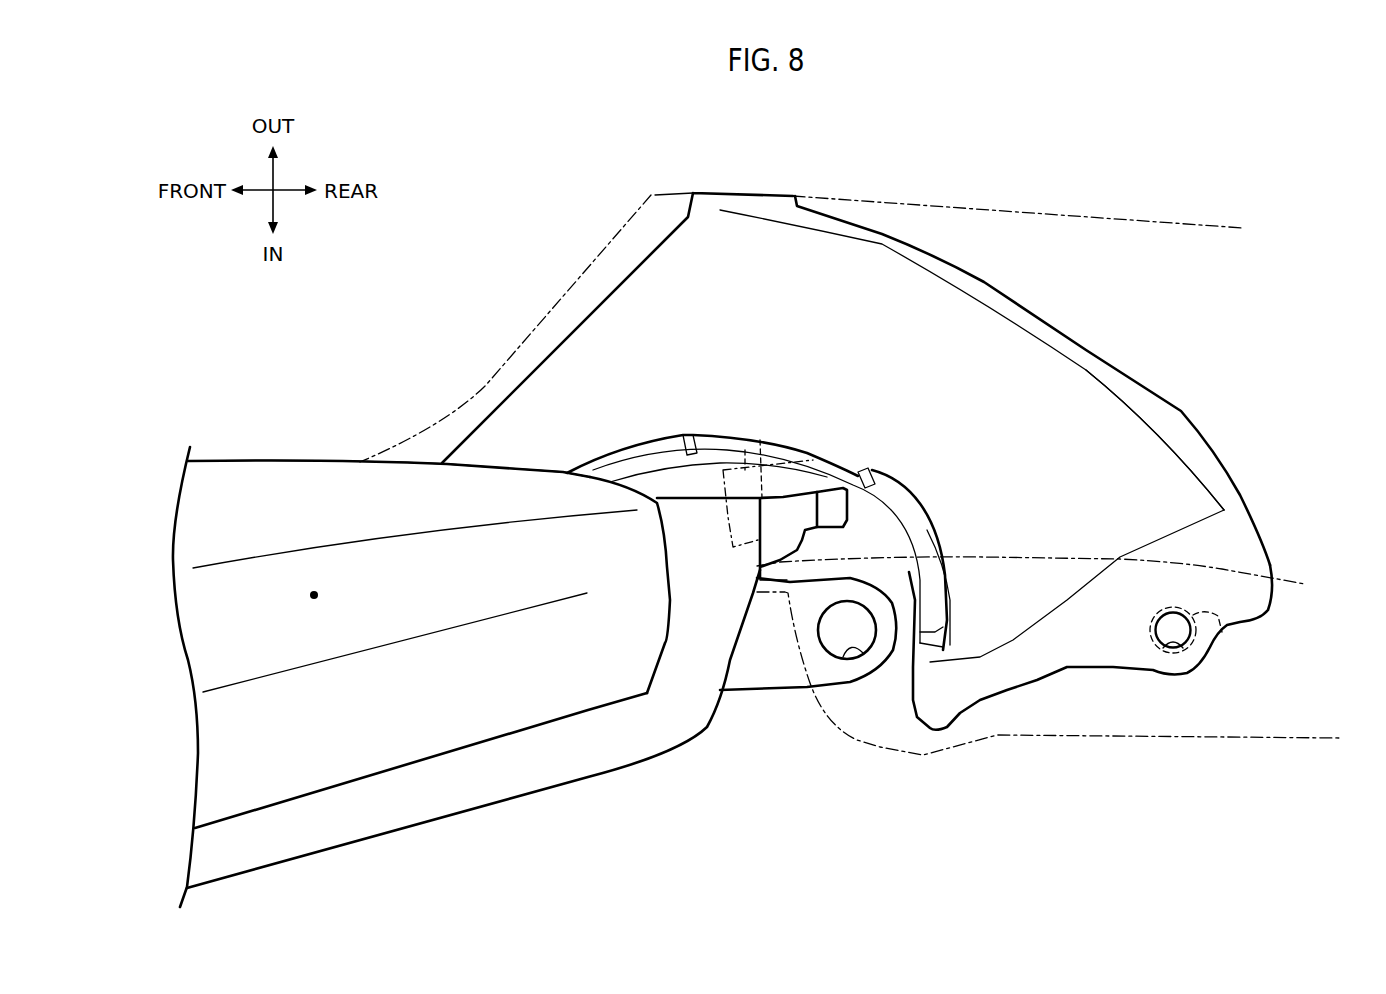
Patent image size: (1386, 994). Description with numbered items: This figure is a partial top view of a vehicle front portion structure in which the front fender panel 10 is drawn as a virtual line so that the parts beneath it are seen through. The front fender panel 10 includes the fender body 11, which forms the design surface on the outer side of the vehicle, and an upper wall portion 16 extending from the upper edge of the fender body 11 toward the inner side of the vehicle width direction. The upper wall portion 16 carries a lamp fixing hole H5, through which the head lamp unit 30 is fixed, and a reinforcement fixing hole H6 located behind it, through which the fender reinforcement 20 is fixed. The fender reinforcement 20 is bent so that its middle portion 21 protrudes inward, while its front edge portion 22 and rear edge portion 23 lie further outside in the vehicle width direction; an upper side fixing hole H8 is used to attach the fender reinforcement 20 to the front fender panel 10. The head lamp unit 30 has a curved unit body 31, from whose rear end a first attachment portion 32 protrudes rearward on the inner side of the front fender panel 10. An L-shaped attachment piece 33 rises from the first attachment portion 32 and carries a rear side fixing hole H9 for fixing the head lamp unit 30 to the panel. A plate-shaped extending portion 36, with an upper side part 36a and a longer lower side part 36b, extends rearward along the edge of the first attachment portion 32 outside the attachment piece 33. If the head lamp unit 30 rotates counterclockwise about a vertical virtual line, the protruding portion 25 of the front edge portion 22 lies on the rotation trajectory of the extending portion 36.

The front fender panel 10 is at (657, 187).
The fender body 11 is at (977, 203).
The upper wall portion 16 is at (1082, 735).
The fender reinforcement 20 is at (1100, 305).
The middle portion 21 is at (1118, 462).
The front edge portion 22 is at (895, 495).
The rear edge portion 23 is at (1105, 360).
The protruding portion 25 is at (745, 450).
The head lamp unit 30 is at (252, 445).
The unit body 31 is at (322, 461).
The first attachment portion 32 is at (700, 657).
The attachment piece 33 is at (780, 692).
The extending portion 36 is at (765, 454).
The upper side part 36a is at (805, 490).
The lower side part 36b is at (838, 485).
The lamp fixing hole H5 is at (843, 657).
The reinforcement fixing hole H6 is at (1220, 633).
The upper side fixing hole H8 is at (1172, 650).
The rear side fixing hole H9 is at (854, 689).